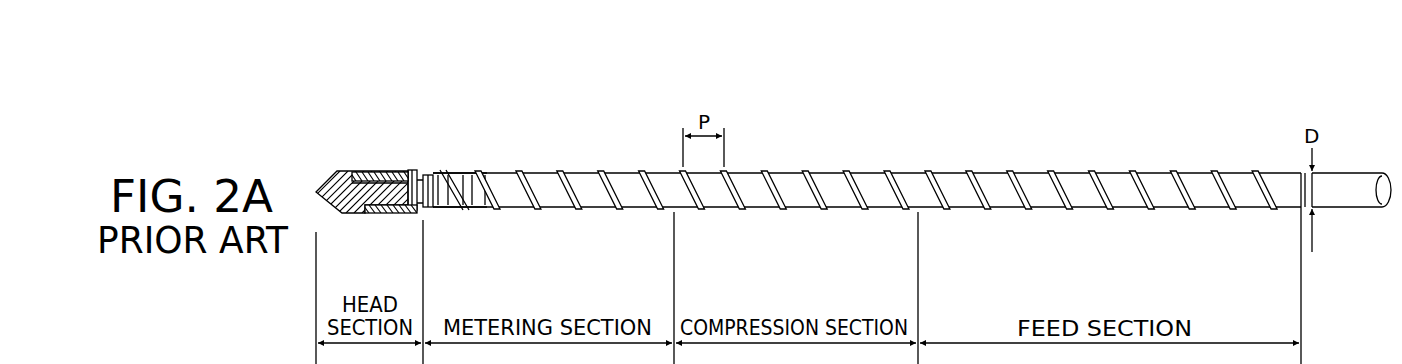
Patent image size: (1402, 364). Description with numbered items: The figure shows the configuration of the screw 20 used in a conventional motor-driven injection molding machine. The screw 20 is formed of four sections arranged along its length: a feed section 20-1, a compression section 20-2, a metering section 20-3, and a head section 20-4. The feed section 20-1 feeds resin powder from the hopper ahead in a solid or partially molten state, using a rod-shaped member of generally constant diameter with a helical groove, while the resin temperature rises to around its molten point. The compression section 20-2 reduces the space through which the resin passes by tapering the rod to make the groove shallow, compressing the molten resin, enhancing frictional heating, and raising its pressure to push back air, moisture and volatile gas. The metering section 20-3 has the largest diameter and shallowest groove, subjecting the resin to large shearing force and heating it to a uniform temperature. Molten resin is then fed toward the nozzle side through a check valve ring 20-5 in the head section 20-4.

The screw 20 is at (937, 151).
The feed section 20-1 is at (1086, 212).
The compression section 20-2 is at (796, 212).
The metering section 20-3 is at (549, 212).
The head section 20-4 is at (378, 213).
The check valve ring 20-5 is at (381, 167).